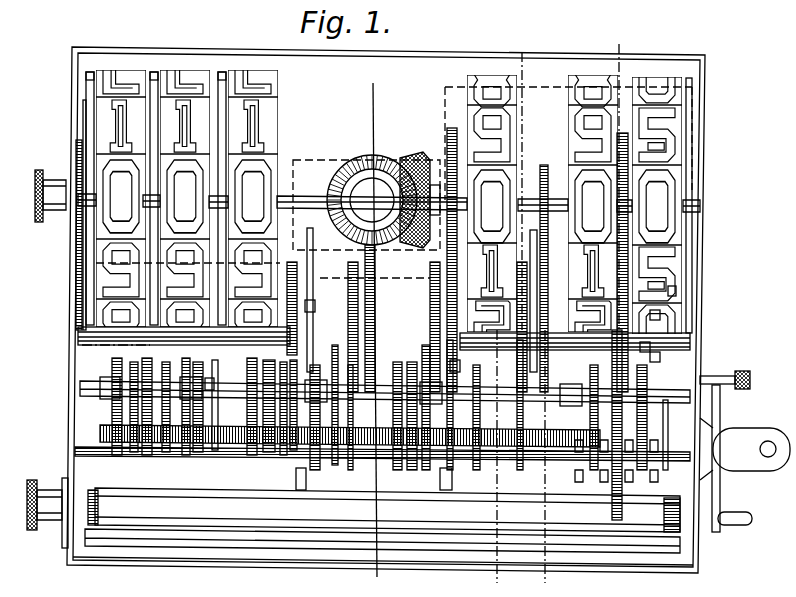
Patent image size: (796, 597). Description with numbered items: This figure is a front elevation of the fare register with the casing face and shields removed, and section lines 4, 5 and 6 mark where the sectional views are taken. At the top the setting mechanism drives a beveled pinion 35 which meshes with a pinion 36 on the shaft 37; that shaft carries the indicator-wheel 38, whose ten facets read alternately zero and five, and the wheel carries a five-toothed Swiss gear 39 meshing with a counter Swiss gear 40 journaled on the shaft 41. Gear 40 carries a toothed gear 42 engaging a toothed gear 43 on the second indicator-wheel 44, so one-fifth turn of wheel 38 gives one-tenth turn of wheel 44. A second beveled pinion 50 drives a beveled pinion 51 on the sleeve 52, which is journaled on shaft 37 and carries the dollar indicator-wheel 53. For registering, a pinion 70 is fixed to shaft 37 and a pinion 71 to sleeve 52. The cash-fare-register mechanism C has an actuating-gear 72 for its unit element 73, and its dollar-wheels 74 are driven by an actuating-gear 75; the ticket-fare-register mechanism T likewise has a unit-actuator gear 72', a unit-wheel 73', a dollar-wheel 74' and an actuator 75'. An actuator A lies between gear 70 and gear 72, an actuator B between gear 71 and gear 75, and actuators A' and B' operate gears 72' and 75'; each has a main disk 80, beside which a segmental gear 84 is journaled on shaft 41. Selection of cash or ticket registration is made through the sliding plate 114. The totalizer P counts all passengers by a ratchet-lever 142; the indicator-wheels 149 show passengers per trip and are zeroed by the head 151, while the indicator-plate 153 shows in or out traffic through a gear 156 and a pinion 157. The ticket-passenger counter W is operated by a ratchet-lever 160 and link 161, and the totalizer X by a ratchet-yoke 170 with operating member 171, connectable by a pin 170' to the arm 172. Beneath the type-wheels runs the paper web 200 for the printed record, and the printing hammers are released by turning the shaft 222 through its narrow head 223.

The beveled pinion 35 is at (385, 166).
The pinion 36 is at (368, 300).
The shaft 37 is at (352, 162).
The indicator-wheel 38 is at (672, 292).
The five-toothed Swiss gear 39 is at (640, 202).
The counter Swiss gear 40 is at (645, 347).
The shaft 41 is at (656, 352).
The toothed gear 42 is at (655, 314).
The toothed gear 43 is at (625, 170).
The second indicator-wheel 44 is at (590, 120).
The beveled pinion 50 is at (330, 172).
The beveled pinion 51 is at (408, 172).
The sleeve 52 is at (440, 186).
The indicator-wheel 53 is at (472, 108).
The pinion 70 is at (544, 186).
The pinion 71 is at (457, 160).
The actuating-gear 72 is at (527, 434).
The unit-actuator gear 72' is at (352, 446).
The unit element 73 is at (463, 434).
The unit-wheel 73' is at (310, 446).
The dollar-wheels 74 is at (403, 445).
The dollar-wheel 74' is at (256, 442).
The actuating-gear 75 is at (432, 436).
The actuator 75' is at (284, 475).
The main disk 80 is at (457, 366).
The segmental gear 84 is at (300, 268).
The sliding plate 114 is at (751, 449).
The ratchet-lever 142 is at (160, 492).
The indicator-wheels 149 is at (232, 82).
The head 151 is at (38, 172).
The indicator-plate 153 is at (105, 348).
The gear 156 is at (82, 317).
The pinion 157 is at (80, 150).
The ratchet-lever 160 is at (222, 426).
The link 161 is at (210, 382).
The ratchet-yoke 170 is at (732, 440).
The pin 170' is at (725, 366).
The operating member 171 is at (722, 497).
The arm 172 is at (565, 458).
The paper web 200 is at (105, 548).
The shaft 222 is at (86, 513).
The narrow head 223 is at (33, 480).
The section line 4 4 is at (374, 330).
The section line 5 5 is at (508, 313).
The section line 6 6 is at (583, 309).
The actuator A is at (575, 320).
The actuator A' is at (383, 318).
The actuator B is at (430, 327).
The actuator B' is at (317, 300).
The cash-fare-register mechanism C is at (446, 480).
The totalizer P is at (137, 494).
The ticket-fare-register mechanism T is at (300, 480).
The ticket-passenger counter W is at (212, 492).
The totalizer X is at (620, 472).